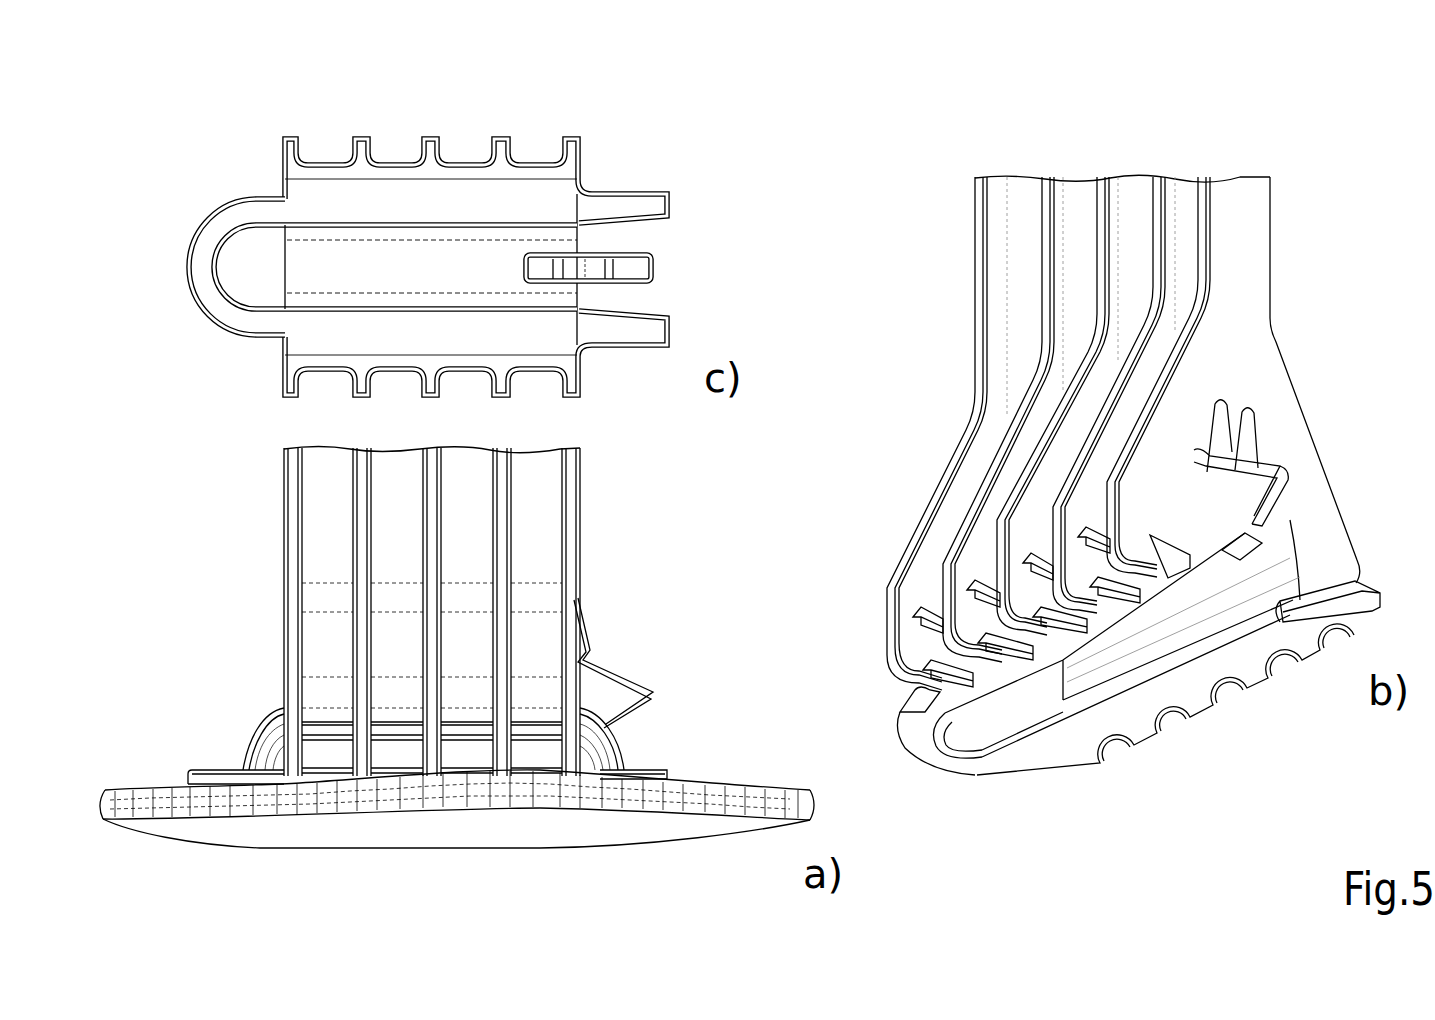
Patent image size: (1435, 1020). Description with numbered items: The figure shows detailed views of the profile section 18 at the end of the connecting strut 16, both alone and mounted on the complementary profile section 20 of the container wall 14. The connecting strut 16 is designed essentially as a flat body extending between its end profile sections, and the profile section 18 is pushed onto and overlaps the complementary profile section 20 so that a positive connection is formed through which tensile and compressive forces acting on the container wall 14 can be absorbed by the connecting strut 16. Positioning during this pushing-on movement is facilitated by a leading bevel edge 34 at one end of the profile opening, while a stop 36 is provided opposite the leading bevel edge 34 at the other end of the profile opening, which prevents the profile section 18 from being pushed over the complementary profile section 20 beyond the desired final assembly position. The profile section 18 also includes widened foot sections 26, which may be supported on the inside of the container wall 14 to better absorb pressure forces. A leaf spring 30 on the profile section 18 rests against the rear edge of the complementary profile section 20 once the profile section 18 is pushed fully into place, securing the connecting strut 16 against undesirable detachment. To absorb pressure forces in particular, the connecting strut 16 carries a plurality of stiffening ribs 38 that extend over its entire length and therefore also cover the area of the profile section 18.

The container wall 14 is at (740, 797).
The connecting strut 16 is at (320, 475).
The profile section 18 is at (600, 171).
The complementary profile section 20 is at (603, 743).
The widened foot section 26 is at (327, 195).
The leaf spring 30 is at (640, 267).
The leading bevel edge 34 is at (652, 205).
The stop 36 is at (190, 266).
The stiffening rib 38 is at (428, 137).